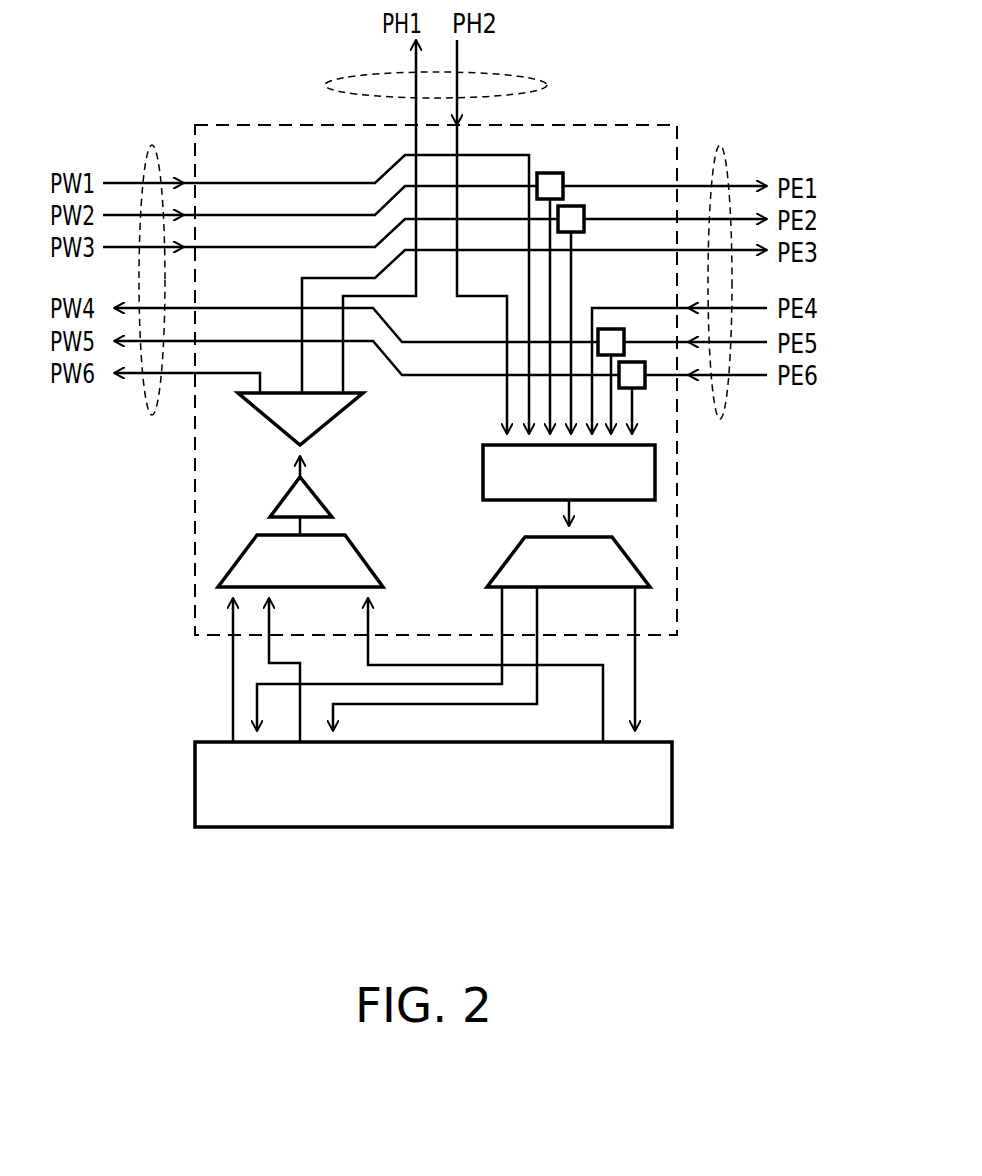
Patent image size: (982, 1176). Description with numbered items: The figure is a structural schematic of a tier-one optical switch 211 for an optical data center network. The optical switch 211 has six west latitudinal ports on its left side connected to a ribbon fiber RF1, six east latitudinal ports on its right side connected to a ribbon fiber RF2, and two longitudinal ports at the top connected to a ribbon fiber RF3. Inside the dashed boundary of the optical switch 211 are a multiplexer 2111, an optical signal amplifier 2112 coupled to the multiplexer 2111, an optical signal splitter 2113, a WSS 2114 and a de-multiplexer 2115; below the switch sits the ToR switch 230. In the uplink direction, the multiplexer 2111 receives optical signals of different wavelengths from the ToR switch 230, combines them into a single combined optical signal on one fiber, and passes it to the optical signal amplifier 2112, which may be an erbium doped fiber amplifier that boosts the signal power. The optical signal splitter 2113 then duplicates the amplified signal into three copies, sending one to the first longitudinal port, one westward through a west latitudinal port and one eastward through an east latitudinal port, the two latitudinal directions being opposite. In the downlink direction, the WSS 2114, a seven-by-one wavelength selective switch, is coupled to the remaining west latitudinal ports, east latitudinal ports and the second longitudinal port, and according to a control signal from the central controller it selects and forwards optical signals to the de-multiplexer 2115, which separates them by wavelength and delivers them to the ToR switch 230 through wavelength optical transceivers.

The optical switch 211 is at (625, 125).
The multiplexer 2111 is at (233, 565).
The optical signal amplifier 2112 is at (280, 495).
The optical signal splitter 2113 is at (277, 427).
The WSS 2114 is at (655, 475).
The de-multiplexer 2115 is at (637, 565).
The ToR switch 230 is at (672, 783).
The ribbon fiber RF1 is at (147, 160).
The ribbon fiber RF2 is at (725, 160).
The ribbon fiber RF3 is at (515, 78).